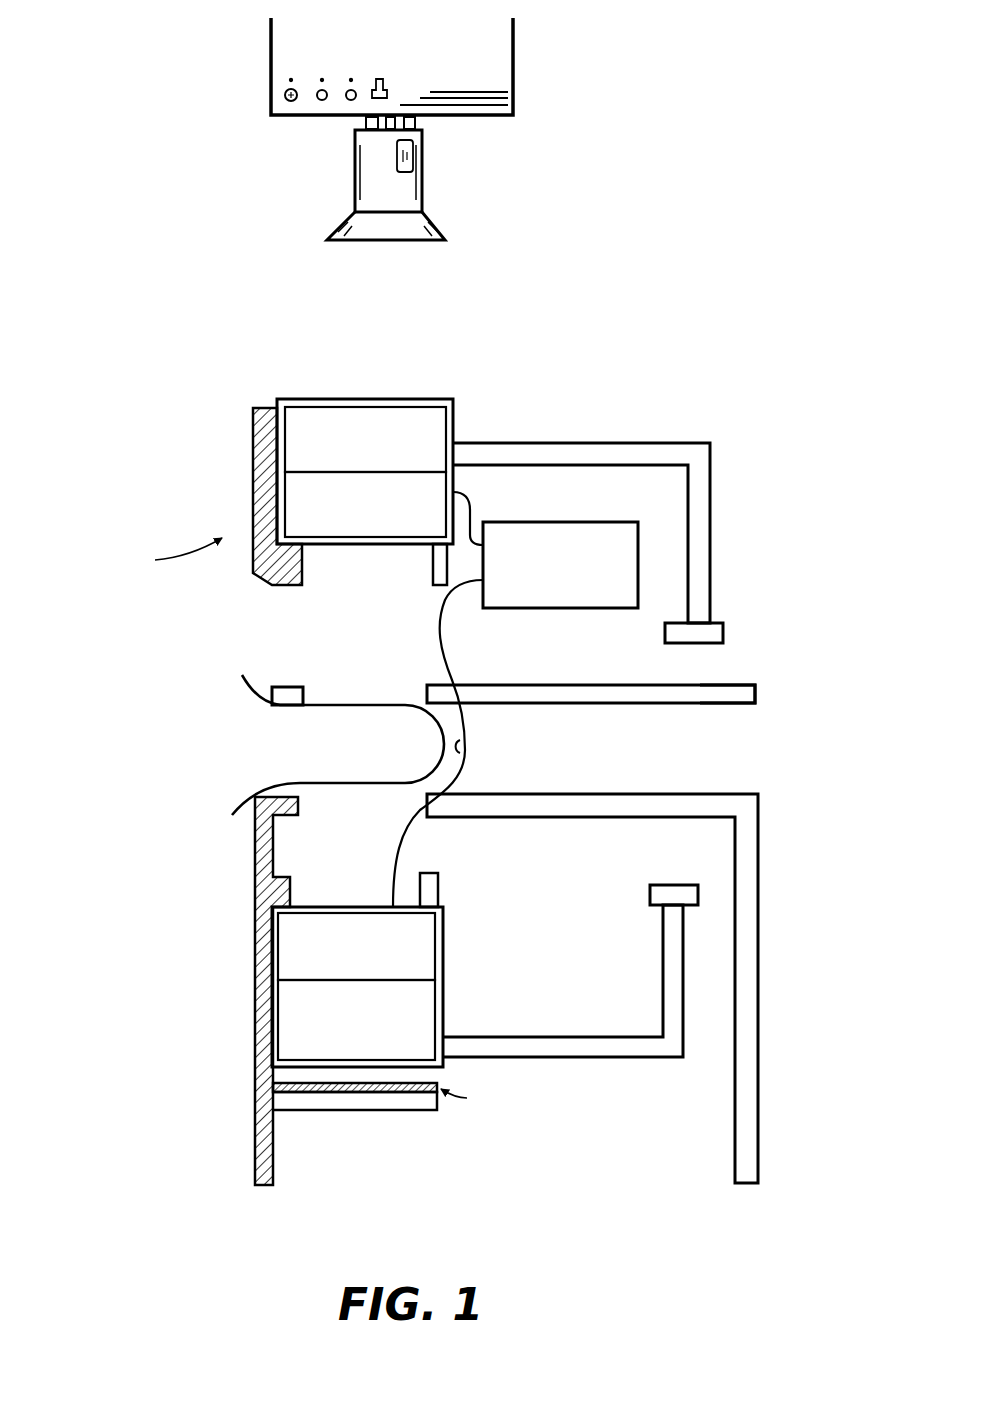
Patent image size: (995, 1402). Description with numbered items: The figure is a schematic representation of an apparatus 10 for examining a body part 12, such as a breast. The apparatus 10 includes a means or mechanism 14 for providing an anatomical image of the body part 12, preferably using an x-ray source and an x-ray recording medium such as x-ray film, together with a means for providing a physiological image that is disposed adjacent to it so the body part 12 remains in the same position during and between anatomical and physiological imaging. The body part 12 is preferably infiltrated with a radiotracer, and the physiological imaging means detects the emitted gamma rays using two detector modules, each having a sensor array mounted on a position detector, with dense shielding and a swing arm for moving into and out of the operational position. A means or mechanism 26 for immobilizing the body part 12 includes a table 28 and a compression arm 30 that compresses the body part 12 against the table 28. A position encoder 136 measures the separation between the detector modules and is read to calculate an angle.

The apparatus 10 is at (822, 681).
The body part 12 is at (362, 767).
The means for providing an anatomical image 14 is at (172, 70).
The means for immobilizing the body part 26 is at (514, 709).
The table 28 is at (762, 880).
The compression arm 30 is at (719, 708).
The position encoder 136 is at (562, 520).